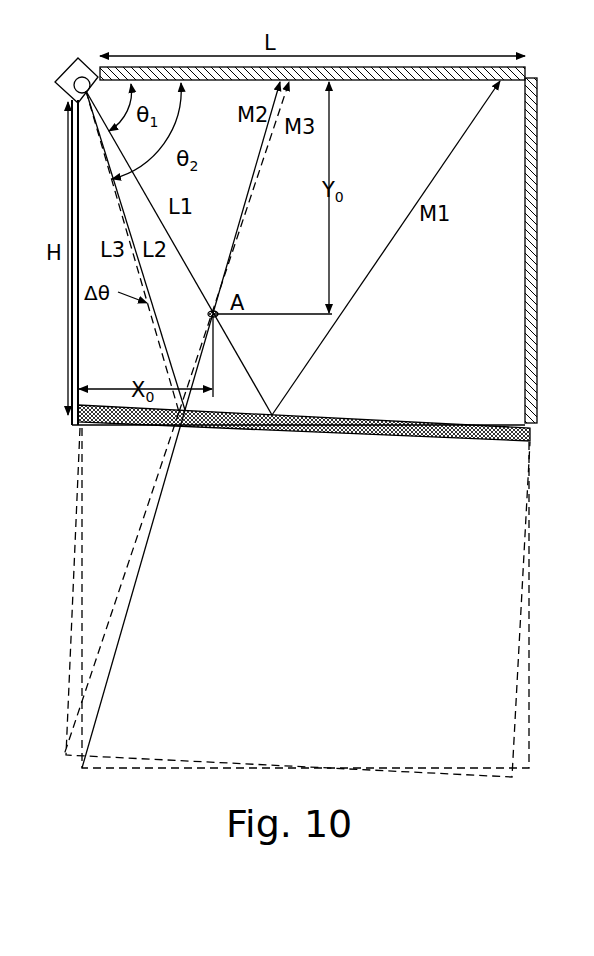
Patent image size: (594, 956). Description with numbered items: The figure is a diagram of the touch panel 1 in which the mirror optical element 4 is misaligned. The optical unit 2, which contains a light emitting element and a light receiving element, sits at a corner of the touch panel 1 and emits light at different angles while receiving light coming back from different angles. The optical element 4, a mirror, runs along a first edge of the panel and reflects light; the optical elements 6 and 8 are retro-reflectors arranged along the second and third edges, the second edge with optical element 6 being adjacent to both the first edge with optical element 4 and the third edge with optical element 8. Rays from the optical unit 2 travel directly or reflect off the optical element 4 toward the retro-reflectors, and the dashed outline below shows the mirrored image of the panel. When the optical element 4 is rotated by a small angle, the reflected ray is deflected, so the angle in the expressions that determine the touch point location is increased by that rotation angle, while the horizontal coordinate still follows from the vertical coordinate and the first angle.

The touch panel 1 is at (92, 337).
The optical unit 2 is at (63, 92).
The optical element 4 is at (386, 428).
The optical element 6 is at (531, 253).
The optical element 8 is at (296, 72).